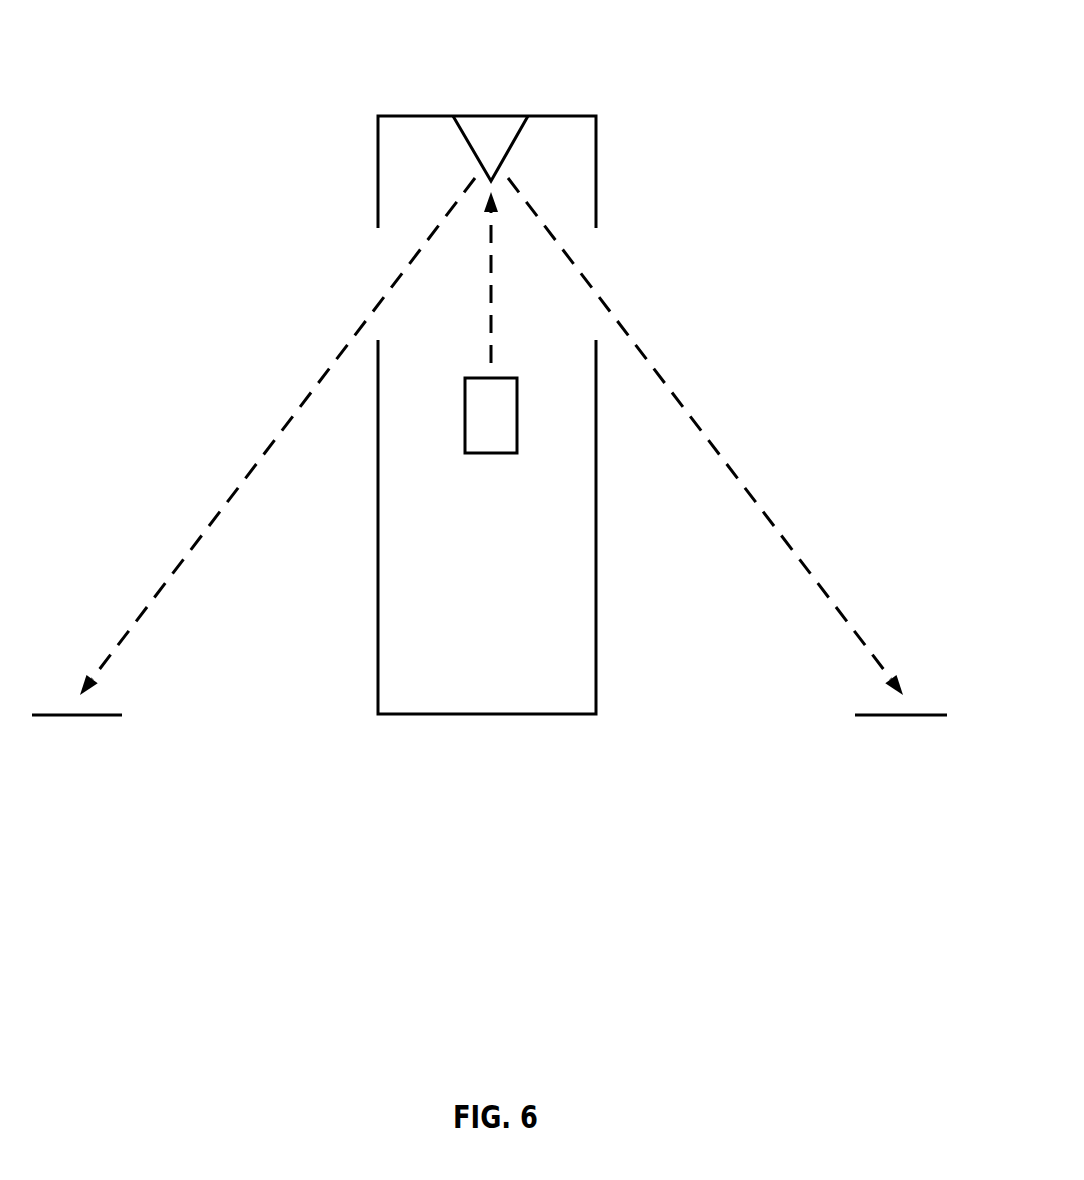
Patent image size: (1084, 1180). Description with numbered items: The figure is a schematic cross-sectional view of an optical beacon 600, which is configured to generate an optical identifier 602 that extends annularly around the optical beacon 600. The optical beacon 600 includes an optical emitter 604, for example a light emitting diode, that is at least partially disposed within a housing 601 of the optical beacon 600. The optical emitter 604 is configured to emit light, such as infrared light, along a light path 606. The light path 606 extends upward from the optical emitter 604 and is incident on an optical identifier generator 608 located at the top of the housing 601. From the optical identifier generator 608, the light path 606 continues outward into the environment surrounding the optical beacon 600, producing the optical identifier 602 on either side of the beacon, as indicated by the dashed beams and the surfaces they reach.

The optical beacon 600 is at (670, 70).
The housing 601 is at (596, 155).
The optical identifier 602 is at (98, 715).
The optical emitter 604 is at (482, 453).
The light path 606 is at (492, 282).
The optical identifier generator 608 is at (517, 140).